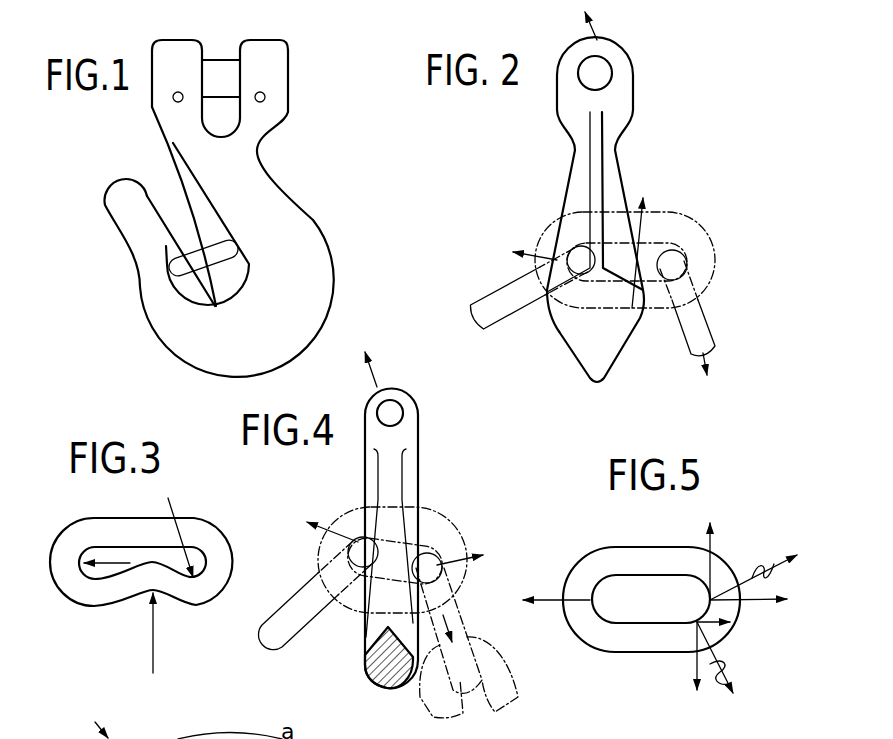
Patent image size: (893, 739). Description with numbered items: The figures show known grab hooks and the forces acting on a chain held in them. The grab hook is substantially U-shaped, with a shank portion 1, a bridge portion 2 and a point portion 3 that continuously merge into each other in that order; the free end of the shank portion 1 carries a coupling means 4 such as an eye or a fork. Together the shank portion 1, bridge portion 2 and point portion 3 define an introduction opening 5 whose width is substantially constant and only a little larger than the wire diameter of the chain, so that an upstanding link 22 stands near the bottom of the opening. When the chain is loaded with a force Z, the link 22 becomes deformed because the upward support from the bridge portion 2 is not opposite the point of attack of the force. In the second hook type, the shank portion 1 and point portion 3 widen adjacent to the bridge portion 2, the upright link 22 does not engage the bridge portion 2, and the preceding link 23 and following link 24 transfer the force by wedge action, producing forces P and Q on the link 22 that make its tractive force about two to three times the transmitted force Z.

In FIG. 1, the shank portion 1 is at (273, 210).
In FIG. 2, the shank portion 1 is at (607, 173).
In FIG. 4, the shank portion 1 is at (363, 468).
In FIG. 1, the bridge portion 2 is at (210, 357).
In FIG. 2, the bridge portion 2 is at (573, 342).
In FIG. 4, the bridge portion 2 is at (363, 670).
In FIG. 1, the point portion 3 is at (142, 245).
In FIG. 4, the point portion 3 is at (372, 615).
In FIG. 1, the coupling means 4 is at (273, 73).
In FIG. 1, the introduction opening 5 is at (163, 185).
In FIG. 2, the upstanding link 22 is at (697, 223).
In FIG. 3, the upstanding link 22 is at (97, 525).
In FIG. 4, the upstanding link 22 is at (440, 528).
In FIG. 5, the upstanding link 22 is at (662, 553).
In FIG. 2, the preceding link 23 is at (495, 290).
In FIG. 4, the preceding link 23 is at (295, 587).
In FIG. 2, the following link 24 is at (710, 323).
In FIG. 4, the following link 24 is at (503, 653).